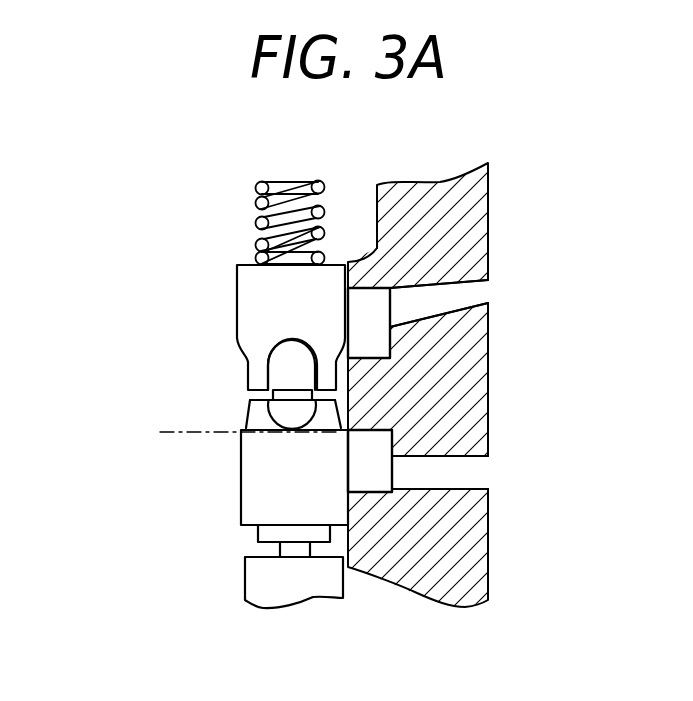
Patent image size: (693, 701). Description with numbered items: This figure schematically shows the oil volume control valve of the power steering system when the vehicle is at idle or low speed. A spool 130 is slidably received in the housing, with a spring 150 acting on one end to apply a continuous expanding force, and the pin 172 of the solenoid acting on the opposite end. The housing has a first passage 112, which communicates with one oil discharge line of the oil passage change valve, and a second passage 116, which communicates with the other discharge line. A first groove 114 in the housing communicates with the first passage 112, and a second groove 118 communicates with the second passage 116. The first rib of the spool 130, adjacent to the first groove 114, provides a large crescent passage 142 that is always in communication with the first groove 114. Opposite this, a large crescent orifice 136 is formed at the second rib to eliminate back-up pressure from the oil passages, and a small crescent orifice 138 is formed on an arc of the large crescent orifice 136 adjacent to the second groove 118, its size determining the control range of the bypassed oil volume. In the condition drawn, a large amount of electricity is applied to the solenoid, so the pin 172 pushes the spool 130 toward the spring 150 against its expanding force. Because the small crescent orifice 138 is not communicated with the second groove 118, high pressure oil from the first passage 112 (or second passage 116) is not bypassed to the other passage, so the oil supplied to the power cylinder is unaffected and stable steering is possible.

The first passage 112 is at (462, 288).
The first groove 114 is at (375, 333).
The second passage 116 is at (447, 478).
The second groove 118 is at (373, 455).
The spool 130 is at (217, 285).
The large crescent orifice 136 is at (268, 408).
The small crescent orifice 138 is at (285, 437).
The large crescent passage 142 is at (277, 358).
The spring 150 is at (303, 192).
The pin 172 is at (247, 552).